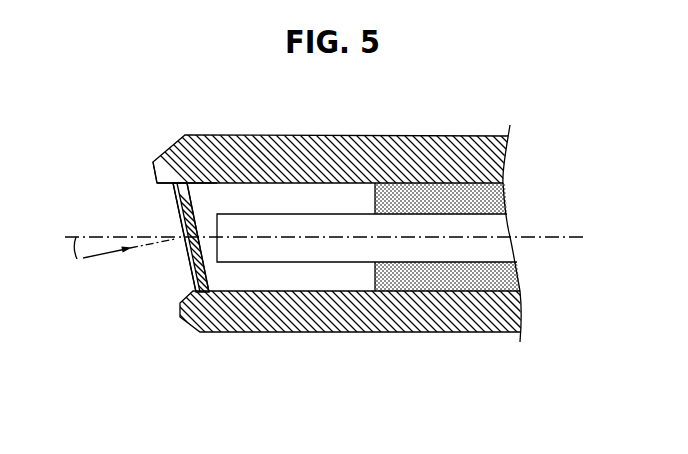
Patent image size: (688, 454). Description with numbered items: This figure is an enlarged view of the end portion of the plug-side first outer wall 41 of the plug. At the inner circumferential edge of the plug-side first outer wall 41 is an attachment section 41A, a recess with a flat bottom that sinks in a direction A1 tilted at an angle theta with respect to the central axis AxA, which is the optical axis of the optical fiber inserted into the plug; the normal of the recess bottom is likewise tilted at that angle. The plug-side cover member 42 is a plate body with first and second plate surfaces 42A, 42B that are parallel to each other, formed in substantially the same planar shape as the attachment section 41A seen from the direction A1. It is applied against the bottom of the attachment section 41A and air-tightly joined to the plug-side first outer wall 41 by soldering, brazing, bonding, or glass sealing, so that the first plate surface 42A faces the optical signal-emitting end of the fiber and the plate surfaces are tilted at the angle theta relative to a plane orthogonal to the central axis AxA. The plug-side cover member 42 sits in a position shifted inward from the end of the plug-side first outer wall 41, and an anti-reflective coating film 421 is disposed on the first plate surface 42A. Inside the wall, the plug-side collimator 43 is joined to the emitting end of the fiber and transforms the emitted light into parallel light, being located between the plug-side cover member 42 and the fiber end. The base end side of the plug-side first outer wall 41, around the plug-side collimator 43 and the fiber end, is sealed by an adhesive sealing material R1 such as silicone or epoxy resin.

The plug-side first outer wall 41 is at (329, 150).
The anti-reflective coating film 421 is at (190, 198).
The attachment section 41A is at (156, 185).
The plug-side cover member 42 is at (193, 283).
The first plate surface 42A is at (207, 270).
The second plate surface 42B is at (187, 256).
The plug-side collimator 43 is at (334, 252).
The sealing material R1 is at (427, 283).
The central axis AxA is at (562, 236).
The direction A1 is at (107, 257).